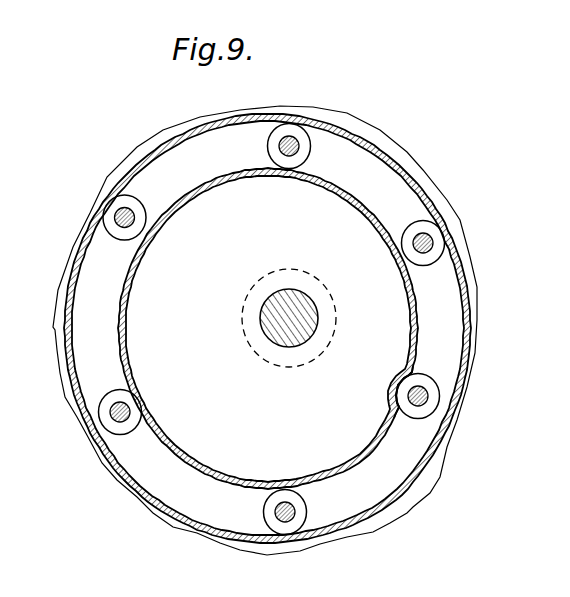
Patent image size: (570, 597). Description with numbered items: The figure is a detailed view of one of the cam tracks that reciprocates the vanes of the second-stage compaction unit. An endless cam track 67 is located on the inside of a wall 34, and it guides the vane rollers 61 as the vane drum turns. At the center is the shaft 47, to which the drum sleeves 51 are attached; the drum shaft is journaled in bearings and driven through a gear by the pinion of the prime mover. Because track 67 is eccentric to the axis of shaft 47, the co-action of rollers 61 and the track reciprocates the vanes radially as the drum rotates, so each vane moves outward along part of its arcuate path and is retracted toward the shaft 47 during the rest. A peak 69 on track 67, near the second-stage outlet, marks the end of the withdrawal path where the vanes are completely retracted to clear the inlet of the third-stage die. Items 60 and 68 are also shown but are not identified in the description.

The wall 34 is at (345, 217).
The shaft 47 is at (316, 308).
The sleeve 51 is at (252, 297).
The bolt 60 is at (291, 138).
The vane roller 61 is at (309, 140).
The cam track 67 is at (294, 323).
The outer ring 68 is at (203, 181).
The peak 69 is at (395, 390).